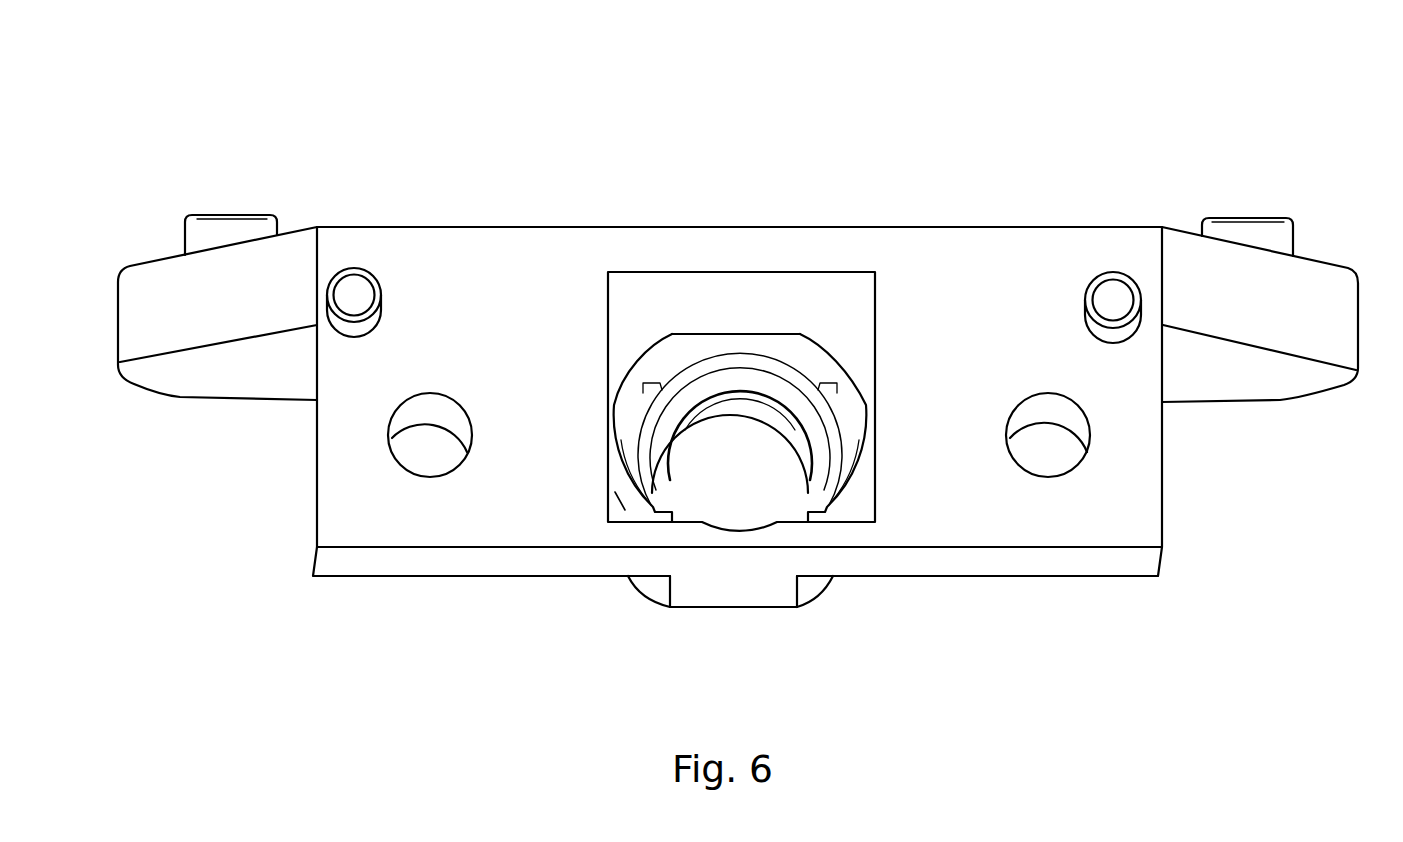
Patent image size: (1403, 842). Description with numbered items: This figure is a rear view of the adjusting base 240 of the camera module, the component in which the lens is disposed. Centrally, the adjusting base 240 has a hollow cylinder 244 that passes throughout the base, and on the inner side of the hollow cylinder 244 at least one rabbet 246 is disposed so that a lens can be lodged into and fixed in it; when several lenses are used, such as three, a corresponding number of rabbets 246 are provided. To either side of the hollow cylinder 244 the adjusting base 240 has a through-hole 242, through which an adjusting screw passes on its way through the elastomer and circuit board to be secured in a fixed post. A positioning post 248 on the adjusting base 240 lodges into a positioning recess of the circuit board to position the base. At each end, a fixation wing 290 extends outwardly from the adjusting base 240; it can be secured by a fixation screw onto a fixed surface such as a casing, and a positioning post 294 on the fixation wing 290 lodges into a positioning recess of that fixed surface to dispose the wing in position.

The adjusting base 240 is at (981, 226).
The through-hole 242 is at (1078, 467).
The hollow cylinder 244 is at (722, 415).
The rabbet 246 is at (692, 388).
The positioning post 248 is at (1115, 290).
The fixation wing 290 is at (1307, 303).
The positioning post 294 is at (1248, 233).